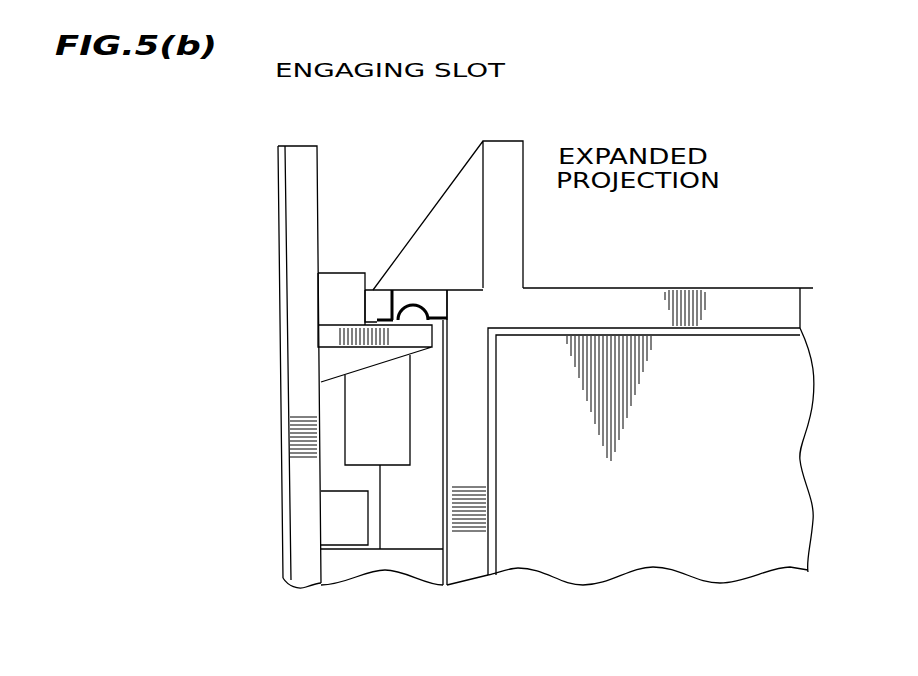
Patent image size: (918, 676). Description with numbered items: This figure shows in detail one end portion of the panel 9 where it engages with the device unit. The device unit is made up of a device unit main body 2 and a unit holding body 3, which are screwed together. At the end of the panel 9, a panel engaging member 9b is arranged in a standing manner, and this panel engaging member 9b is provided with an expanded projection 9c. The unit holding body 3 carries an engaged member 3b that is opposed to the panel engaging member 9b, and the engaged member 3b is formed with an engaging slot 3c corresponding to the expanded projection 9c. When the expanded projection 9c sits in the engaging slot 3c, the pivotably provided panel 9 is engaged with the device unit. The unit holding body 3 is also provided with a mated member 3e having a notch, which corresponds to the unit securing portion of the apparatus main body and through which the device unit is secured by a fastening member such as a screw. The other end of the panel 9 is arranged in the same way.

The device unit main body 2 is at (738, 380).
The unit holding body 3 is at (707, 287).
The engaged member 3b is at (397, 287).
The engaging slot 3c is at (416, 317).
The mated member 3e is at (500, 141).
The panel 9 is at (278, 216).
The panel engaging member 9b is at (351, 348).
The expanded projection 9c is at (410, 318).